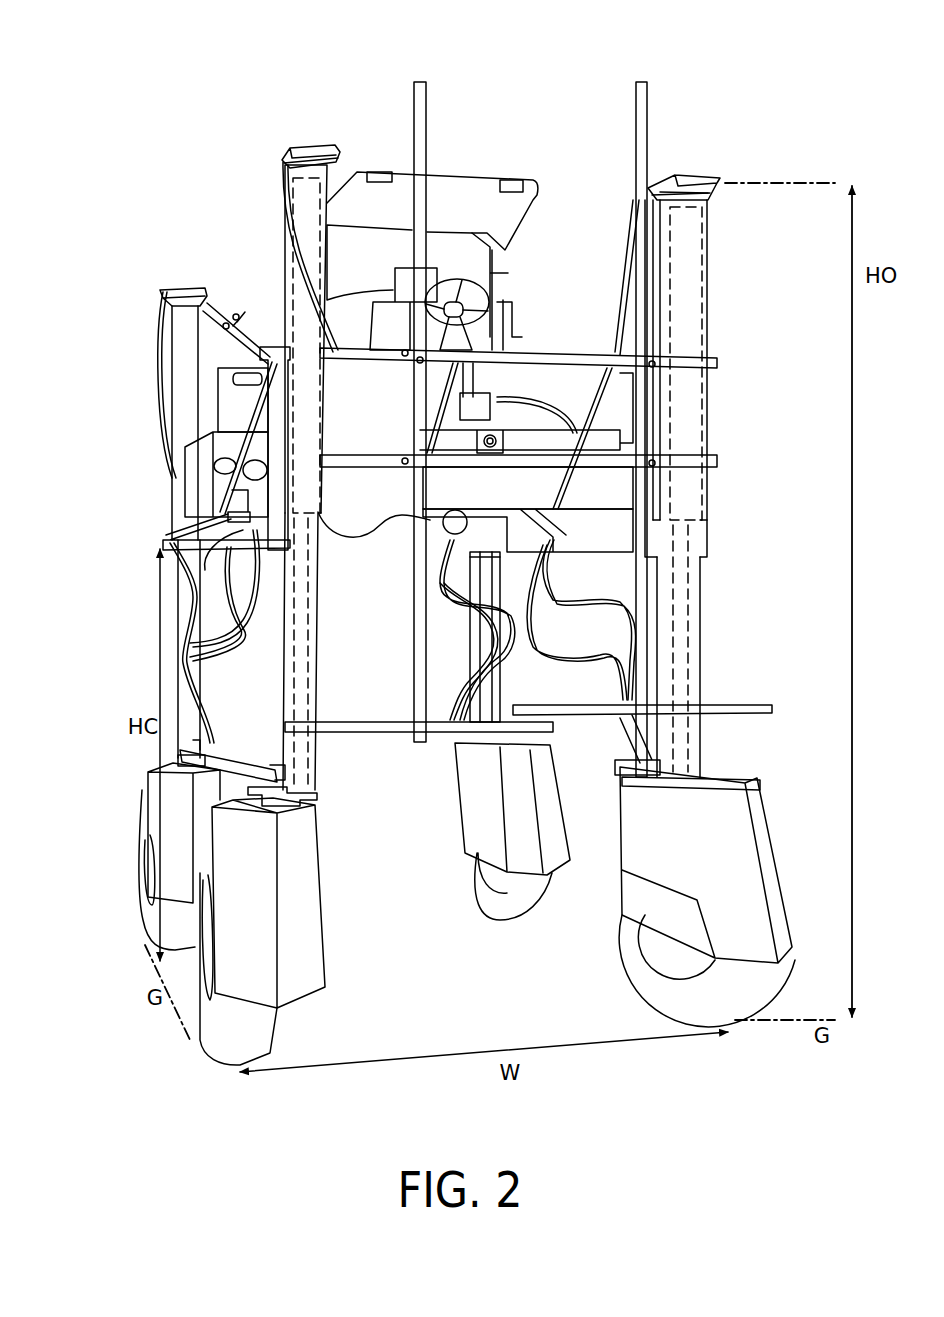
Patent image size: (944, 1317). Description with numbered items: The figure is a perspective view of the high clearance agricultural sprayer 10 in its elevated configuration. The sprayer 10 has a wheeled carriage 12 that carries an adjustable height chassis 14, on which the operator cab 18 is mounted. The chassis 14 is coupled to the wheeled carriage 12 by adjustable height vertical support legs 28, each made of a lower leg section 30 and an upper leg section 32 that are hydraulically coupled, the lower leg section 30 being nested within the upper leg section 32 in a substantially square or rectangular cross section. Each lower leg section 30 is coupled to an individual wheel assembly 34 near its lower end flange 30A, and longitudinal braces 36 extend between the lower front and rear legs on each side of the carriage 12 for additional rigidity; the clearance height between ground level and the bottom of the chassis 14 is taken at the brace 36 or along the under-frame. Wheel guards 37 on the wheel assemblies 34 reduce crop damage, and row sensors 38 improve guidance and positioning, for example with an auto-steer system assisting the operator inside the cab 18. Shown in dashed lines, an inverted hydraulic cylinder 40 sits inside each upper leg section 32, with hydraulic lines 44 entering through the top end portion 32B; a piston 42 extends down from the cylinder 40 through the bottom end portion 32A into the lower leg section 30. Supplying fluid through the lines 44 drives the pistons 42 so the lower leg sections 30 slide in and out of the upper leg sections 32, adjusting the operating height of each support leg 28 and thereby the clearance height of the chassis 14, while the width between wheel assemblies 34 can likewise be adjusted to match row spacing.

The agricultural sprayer 10 is at (192, 63).
The wheeled carriage 12 is at (115, 905).
The chassis 14 is at (195, 478).
The operator cab 18 is at (478, 178).
The support leg 28 is at (310, 138).
The lower leg section 30 is at (320, 625).
The lower end flange 30A is at (312, 800).
The upper leg section 32 is at (290, 232).
The bottom end portion 32A is at (697, 545).
The top end portion 32B is at (333, 150).
The wheel assembly 34 is at (200, 1065).
The longitudinal brace 36 is at (178, 532).
The wheel guard 37 is at (307, 960).
The row sensor 38 is at (375, 732).
The hydraulic cylinder 40 is at (292, 262).
The piston 42 is at (308, 677).
The hydraulic line 44 is at (285, 185).